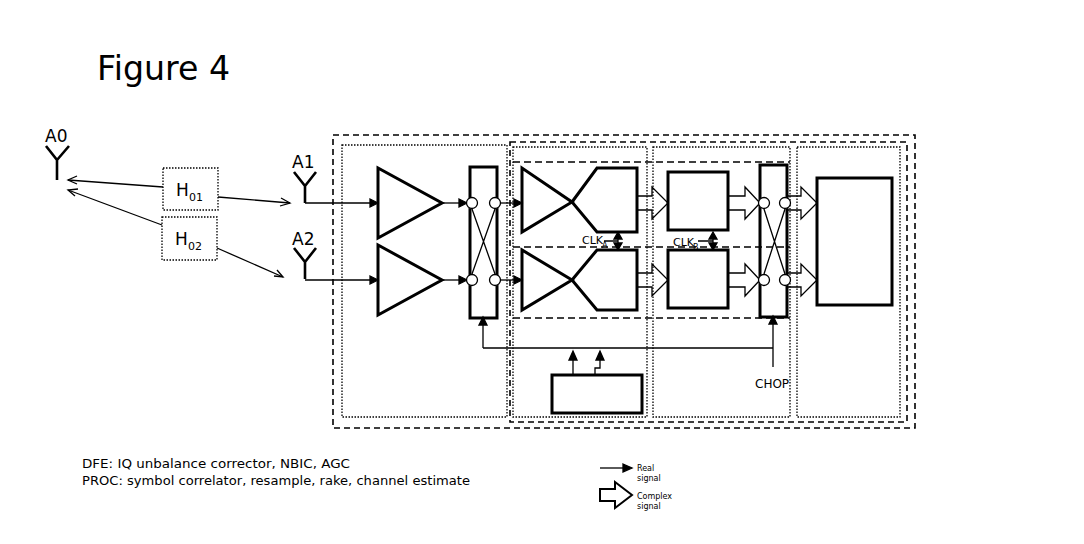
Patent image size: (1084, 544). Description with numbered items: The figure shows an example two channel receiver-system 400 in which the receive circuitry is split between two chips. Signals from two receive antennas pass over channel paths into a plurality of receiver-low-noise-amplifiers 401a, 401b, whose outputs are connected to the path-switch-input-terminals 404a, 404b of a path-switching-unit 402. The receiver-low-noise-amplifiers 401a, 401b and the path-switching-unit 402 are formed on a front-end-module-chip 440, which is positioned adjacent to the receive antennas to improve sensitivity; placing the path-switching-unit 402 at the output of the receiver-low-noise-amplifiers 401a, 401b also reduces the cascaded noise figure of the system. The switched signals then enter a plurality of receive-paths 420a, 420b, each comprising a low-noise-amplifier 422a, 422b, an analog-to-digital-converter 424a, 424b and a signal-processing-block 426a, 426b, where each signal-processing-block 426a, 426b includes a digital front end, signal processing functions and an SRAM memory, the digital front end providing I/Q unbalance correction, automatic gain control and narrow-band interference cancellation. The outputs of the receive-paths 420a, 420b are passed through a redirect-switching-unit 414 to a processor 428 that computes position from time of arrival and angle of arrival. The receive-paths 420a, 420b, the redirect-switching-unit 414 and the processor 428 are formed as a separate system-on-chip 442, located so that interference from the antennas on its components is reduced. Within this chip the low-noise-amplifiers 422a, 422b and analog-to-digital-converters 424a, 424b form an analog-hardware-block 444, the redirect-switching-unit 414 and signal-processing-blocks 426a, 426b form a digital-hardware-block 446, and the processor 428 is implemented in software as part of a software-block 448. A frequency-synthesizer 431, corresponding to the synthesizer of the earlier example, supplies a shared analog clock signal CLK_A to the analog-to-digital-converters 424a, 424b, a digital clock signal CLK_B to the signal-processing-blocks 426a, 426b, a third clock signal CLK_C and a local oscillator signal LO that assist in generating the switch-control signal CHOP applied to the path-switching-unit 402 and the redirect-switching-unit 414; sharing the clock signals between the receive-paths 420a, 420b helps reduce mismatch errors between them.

The receiver-system 400 is at (360, 133).
The receiver-low-noise-amplifier 401a is at (402, 180).
The receiver-low-noise-amplifier 401b is at (410, 302).
The path-switching-unit 402 is at (460, 212).
The path-switch-input-terminal 404a is at (467, 198).
The path-switch-input-terminal 404b is at (467, 273).
The redirect-switching-unit 414 is at (773, 164).
The receive-path 420a is at (653, 162).
The receive-path 420b is at (677, 320).
The low-noise-amplifier 422a is at (547, 180).
The low-noise-amplifier 422b is at (527, 310).
The analog-to-digital-converter 424a is at (618, 166).
The analog-to-digital-converter 424b is at (622, 311).
The signal-processing-block 426a is at (723, 171).
The signal-processing-block 426b is at (698, 310).
The processor 428 is at (838, 307).
The frequency-synthesizer 431 is at (552, 381).
The front-end-module-chip 440 is at (343, 348).
The system-on-chip 442 is at (868, 138).
The analog-hardware-block 444 is at (565, 415).
The digital-hardware-block 446 is at (725, 420).
The software-block 448 is at (848, 420).